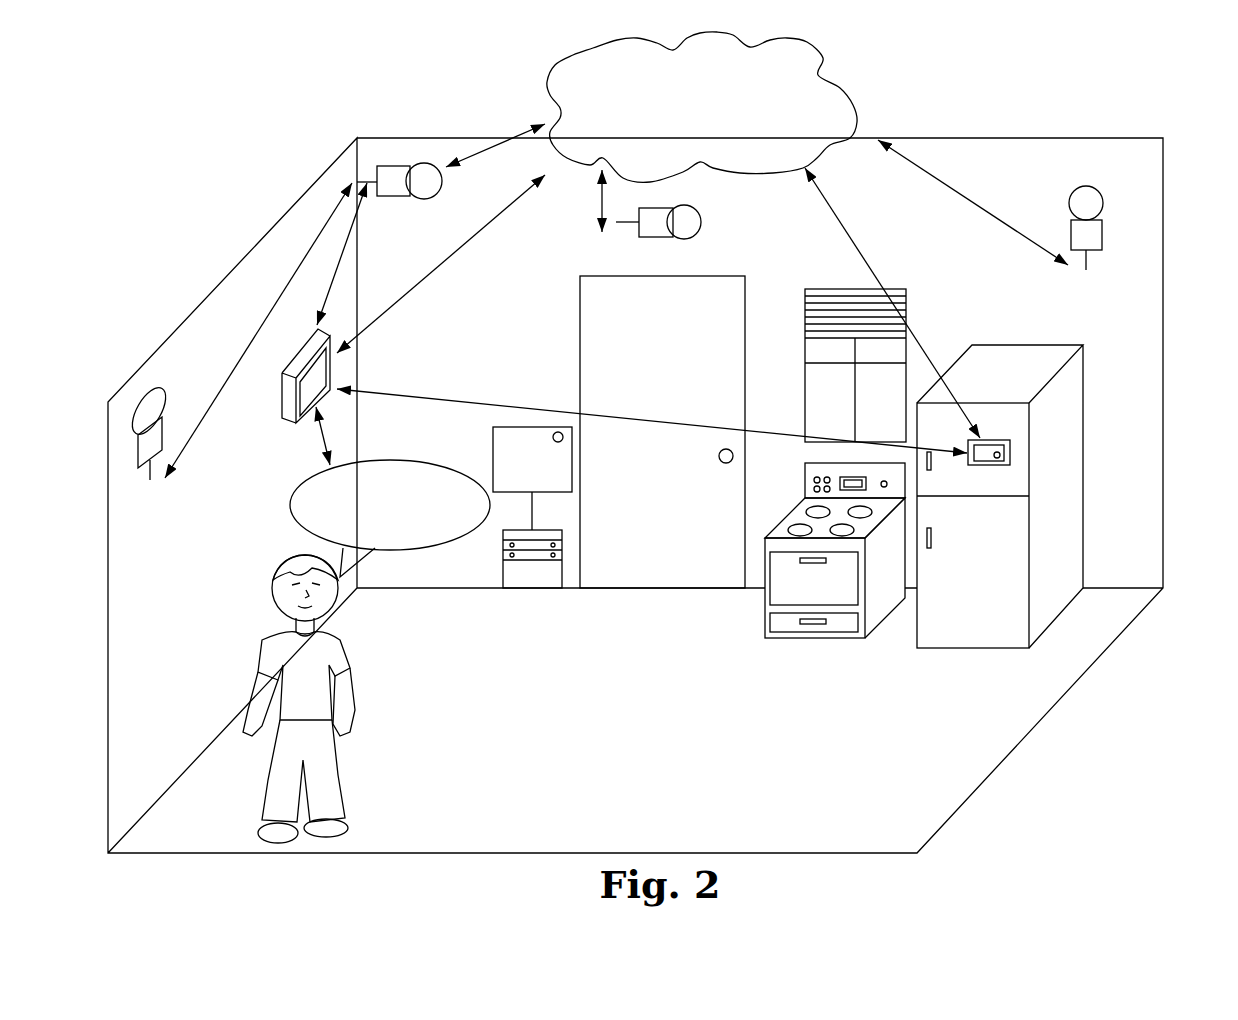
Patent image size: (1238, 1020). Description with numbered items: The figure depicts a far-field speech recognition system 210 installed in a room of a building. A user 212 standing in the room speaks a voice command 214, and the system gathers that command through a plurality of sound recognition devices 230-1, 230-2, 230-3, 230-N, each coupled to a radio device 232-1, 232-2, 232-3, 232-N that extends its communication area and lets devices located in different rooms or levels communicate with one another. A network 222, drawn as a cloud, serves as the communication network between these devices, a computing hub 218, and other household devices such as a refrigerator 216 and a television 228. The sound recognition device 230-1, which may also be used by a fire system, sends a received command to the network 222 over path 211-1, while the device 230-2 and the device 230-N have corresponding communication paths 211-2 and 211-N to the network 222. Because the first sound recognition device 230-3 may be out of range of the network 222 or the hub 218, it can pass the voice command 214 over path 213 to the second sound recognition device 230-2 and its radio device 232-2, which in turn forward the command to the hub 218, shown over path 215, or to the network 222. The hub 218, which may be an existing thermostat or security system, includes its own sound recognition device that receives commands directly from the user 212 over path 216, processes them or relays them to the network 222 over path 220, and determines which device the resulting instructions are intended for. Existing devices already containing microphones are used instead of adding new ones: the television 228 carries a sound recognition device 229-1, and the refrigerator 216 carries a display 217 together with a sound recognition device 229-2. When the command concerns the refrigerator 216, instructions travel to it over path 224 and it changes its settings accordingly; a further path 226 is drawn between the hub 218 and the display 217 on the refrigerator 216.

The far-field speech recognition system 210 is at (180, 210).
The path 211-1 is at (973, 202).
The communication link 211-2 is at (495, 148).
The communication path 211-N is at (572, 201).
The user 212 is at (272, 575).
The path 213 is at (284, 290).
The voice command 214 is at (292, 500).
The communication link 215 is at (341, 267).
The refrigerator 216 is at (1022, 345).
The display 217 is at (1010, 448).
The computing hub 218 is at (296, 366).
The path 220 is at (432, 273).
The network 222 is at (858, 120).
The path 224 is at (857, 248).
The communication link 226 is at (497, 402).
The television 228 is at (493, 442).
The sound recognition device 229-1 is at (558, 432).
The sound recognition device 229-2 is at (1000, 456).
The sound recognition device 230-1 is at (1103, 200).
The sound recognition device 230-2 is at (424, 162).
The sound recognition device 230-3 is at (168, 390).
The sound recognition device 230-N is at (700, 230).
The sensor housing 232-1 is at (1102, 233).
The radio device 232-2 is at (385, 166).
The radio device 232-3 is at (138, 462).
The radio device 232-N is at (660, 238).